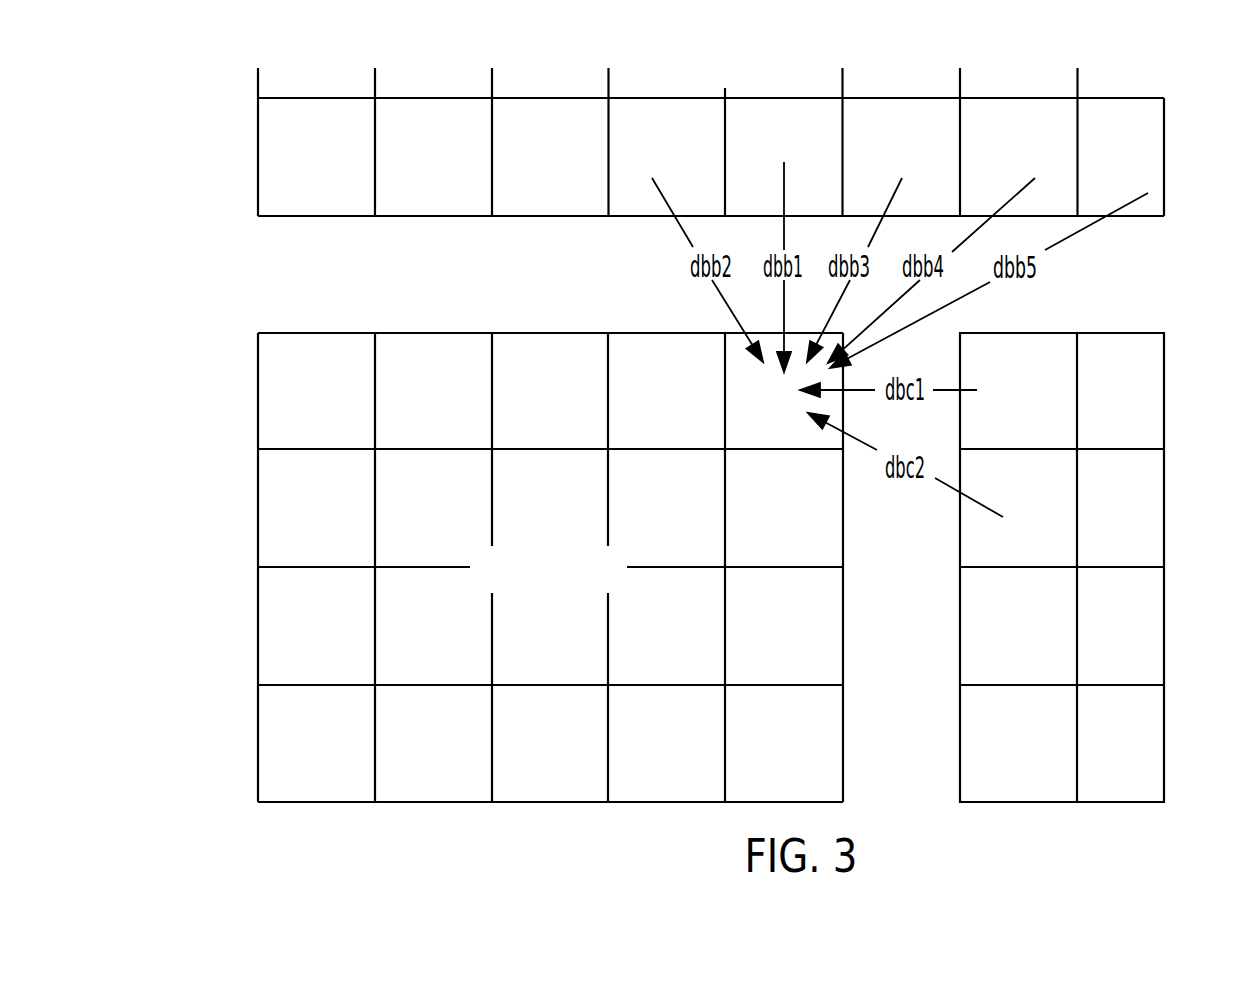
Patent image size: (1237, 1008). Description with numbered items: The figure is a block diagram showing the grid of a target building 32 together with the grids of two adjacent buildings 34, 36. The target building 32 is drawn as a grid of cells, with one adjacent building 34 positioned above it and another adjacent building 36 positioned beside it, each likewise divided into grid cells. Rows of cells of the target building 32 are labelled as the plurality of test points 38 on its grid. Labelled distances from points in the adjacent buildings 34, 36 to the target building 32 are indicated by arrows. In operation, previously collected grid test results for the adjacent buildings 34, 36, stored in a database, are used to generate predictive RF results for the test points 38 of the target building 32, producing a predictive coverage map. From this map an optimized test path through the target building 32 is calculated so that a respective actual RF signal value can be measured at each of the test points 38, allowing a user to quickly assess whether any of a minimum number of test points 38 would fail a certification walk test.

The target building 32 is at (244, 297).
The adjacent building 34 is at (1164, 158).
The adjacent building 36 is at (1152, 328).
The test points 38 is at (317, 393).